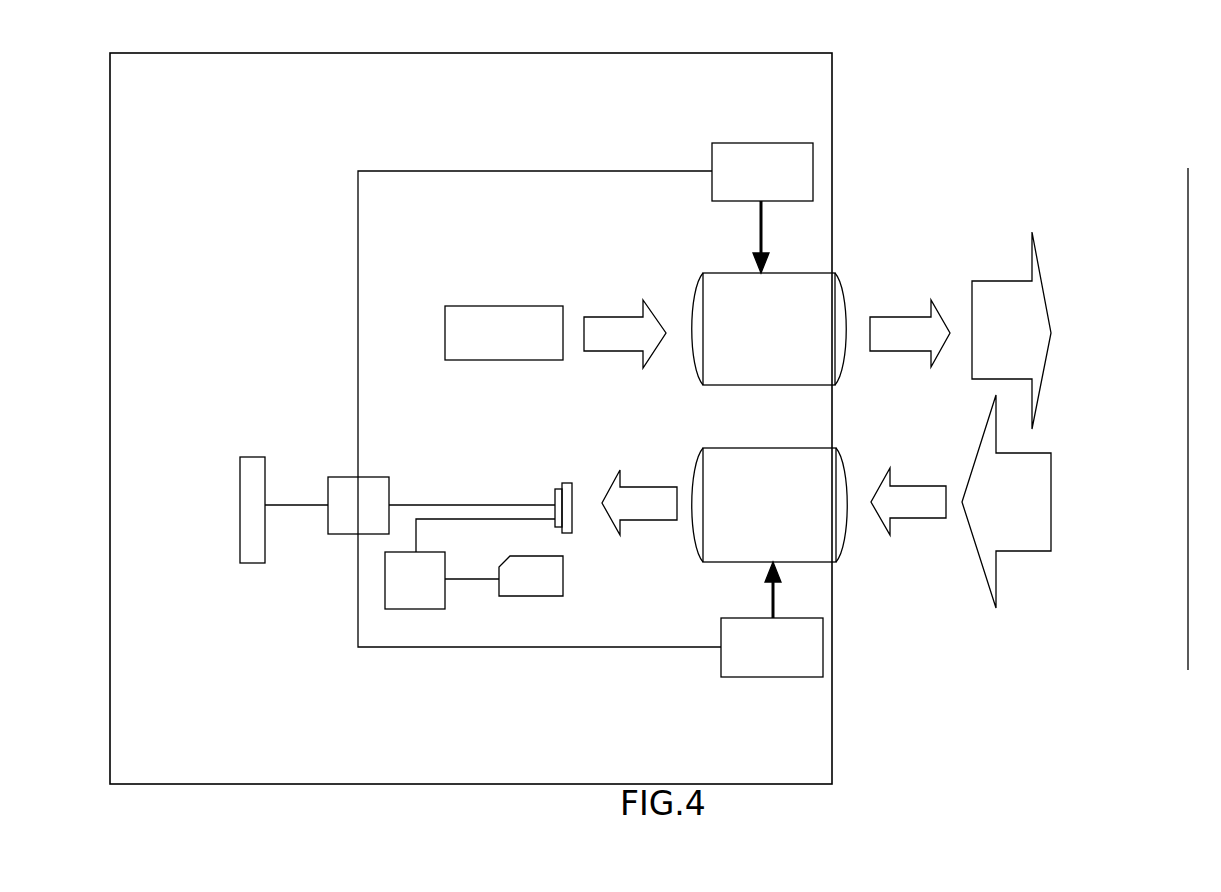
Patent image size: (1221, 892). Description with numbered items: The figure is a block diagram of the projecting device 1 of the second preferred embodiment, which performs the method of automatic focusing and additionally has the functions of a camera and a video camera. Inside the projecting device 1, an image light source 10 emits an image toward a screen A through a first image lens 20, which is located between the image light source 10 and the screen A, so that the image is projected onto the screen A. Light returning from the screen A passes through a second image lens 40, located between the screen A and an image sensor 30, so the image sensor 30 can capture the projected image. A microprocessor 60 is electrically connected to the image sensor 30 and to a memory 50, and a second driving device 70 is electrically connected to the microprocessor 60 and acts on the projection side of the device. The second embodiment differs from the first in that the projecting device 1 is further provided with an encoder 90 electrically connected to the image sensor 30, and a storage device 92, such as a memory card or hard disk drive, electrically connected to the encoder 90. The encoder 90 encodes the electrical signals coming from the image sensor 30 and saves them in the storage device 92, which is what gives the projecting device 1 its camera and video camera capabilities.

The projecting device 1 is at (866, 80).
The image light source 10 is at (475, 306).
The first image lens 20 is at (722, 273).
The image sensor 30 is at (567, 483).
The second image lens 40 is at (723, 448).
The memory 50 is at (253, 457).
The microprocessor 60 is at (372, 477).
The second driving device 70 is at (748, 143).
The encoder 90 is at (415, 609).
The storage device 92 is at (563, 575).
The screen A is at (1188, 168).